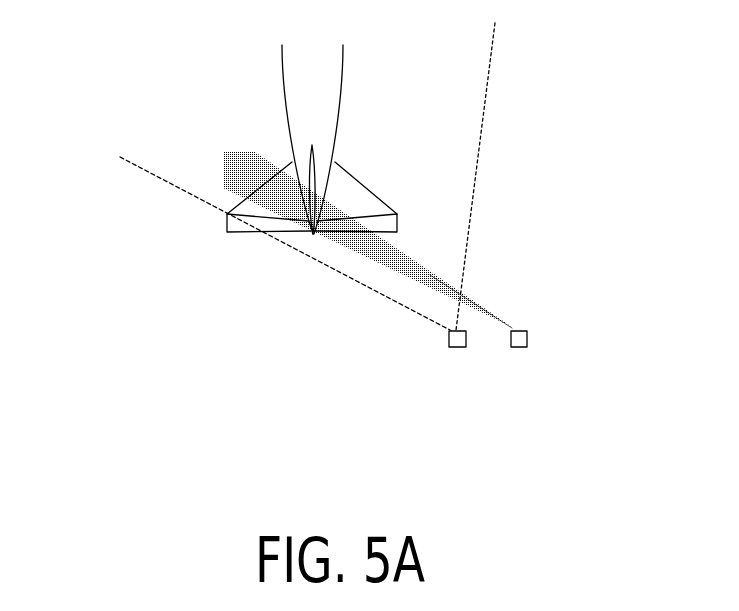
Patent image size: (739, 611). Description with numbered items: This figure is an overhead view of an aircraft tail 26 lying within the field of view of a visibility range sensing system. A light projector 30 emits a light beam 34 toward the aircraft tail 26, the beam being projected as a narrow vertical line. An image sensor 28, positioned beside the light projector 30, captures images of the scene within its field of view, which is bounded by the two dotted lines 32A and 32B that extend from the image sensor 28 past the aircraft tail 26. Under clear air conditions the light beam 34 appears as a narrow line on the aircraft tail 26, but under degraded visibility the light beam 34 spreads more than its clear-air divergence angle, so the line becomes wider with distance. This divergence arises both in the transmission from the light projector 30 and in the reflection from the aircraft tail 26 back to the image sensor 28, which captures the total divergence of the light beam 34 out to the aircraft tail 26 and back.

The aircraft tail 26 is at (343, 85).
The image sensor 28 is at (449, 337).
The light projector 30 is at (527, 337).
The dotted line 32A is at (135, 165).
The dotted line 32B is at (493, 37).
The light beam 34 is at (477, 302).